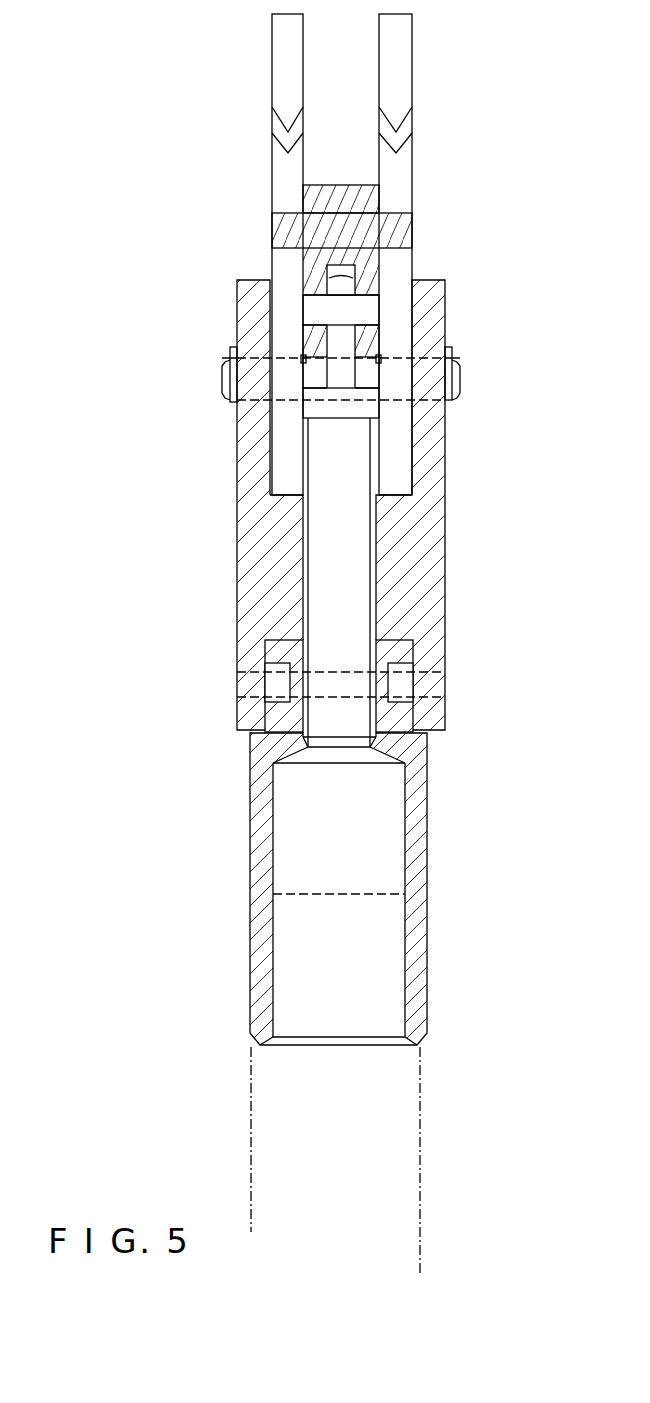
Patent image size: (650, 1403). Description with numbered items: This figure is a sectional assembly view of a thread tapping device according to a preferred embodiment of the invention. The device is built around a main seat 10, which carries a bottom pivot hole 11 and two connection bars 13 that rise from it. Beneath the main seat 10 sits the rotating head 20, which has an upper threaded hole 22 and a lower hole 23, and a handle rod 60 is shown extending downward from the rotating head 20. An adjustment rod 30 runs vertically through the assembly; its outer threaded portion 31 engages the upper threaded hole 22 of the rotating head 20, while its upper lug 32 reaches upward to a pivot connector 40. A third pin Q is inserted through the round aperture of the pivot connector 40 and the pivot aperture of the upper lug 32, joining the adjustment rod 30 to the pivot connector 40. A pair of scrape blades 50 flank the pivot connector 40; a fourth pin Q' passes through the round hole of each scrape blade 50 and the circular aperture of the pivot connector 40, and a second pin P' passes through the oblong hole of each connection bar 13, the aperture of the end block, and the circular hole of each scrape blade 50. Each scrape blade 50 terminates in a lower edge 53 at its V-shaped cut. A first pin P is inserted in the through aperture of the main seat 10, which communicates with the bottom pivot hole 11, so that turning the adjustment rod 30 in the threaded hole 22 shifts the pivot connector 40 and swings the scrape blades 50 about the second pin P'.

The main seat 10 is at (305, 476).
The bottom pivot hole 11 is at (269, 682).
The connection bars 13 is at (245, 278).
The rotating head 20 is at (331, 882).
The upper threaded hole 22 is at (306, 719).
The lower hole 23 is at (399, 932).
The adjustment rod 30 is at (308, 408).
The outer threaded portion 31 is at (375, 720).
The upper lug 32 is at (345, 341).
The pivot connector 40 is at (343, 190).
The scrape blades 50 is at (272, 45).
The lower edge 53 is at (286, 134).
The handle rod 60 is at (268, 1128).
The first pin P is at (362, 678).
The second pin P' is at (362, 374).
The third pin Q is at (396, 302).
The fourth pin Q' is at (375, 226).